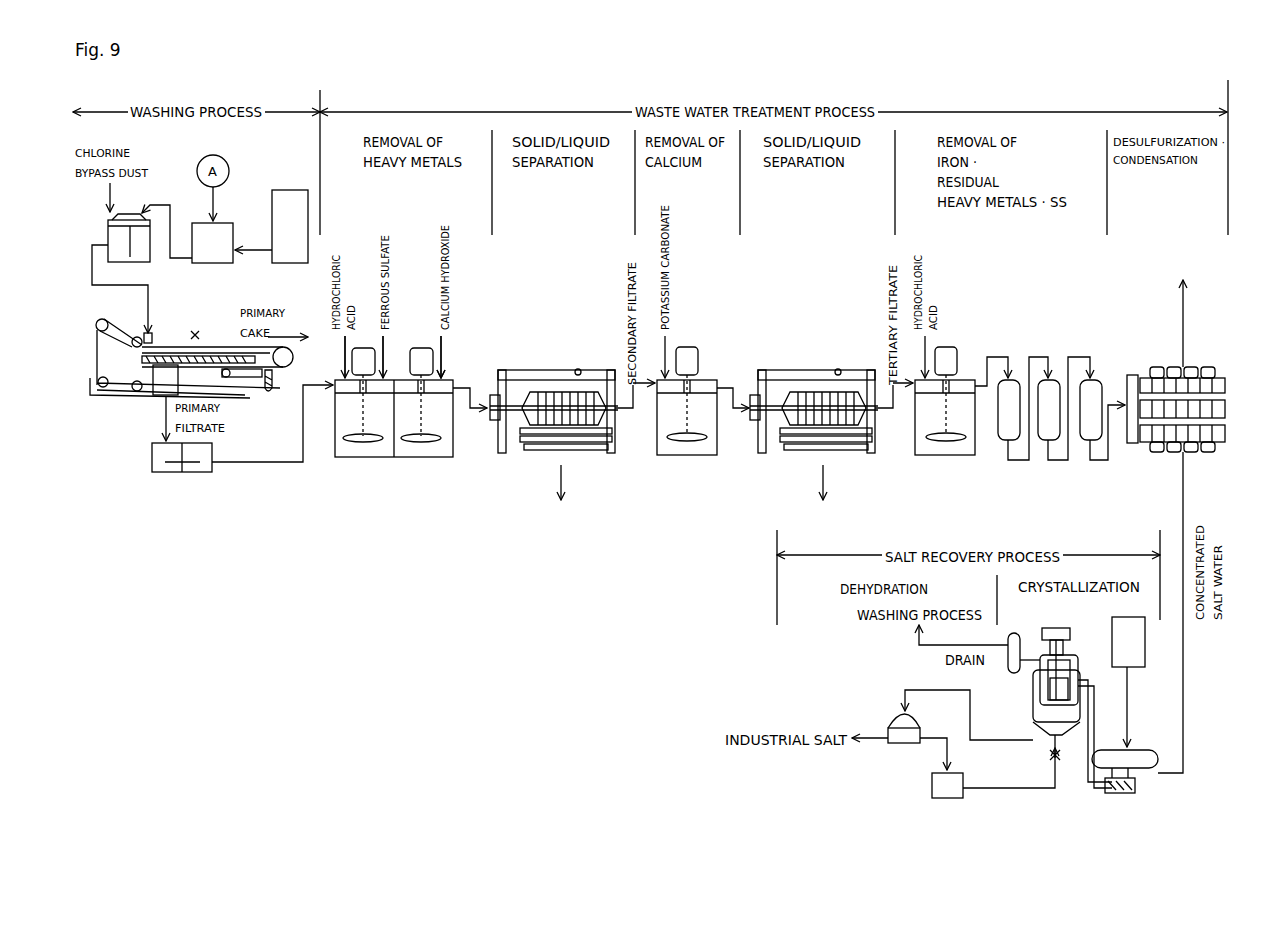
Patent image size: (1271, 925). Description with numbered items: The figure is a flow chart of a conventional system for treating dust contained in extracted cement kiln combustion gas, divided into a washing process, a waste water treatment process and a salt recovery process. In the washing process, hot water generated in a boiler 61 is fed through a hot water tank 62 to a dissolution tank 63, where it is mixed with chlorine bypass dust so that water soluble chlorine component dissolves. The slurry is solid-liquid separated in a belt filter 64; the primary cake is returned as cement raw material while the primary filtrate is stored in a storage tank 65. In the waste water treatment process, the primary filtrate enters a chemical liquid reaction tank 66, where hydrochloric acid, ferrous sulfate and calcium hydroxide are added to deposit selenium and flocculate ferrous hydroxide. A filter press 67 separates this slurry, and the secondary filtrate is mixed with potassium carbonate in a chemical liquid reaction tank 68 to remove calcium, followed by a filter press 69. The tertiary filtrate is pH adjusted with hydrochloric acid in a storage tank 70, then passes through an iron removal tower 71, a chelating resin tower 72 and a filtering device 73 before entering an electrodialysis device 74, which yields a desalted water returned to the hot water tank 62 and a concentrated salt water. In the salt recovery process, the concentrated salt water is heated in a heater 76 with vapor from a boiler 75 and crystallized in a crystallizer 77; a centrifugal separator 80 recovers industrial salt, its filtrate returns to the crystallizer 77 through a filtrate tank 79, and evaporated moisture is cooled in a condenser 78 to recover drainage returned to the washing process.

The boiler 61 is at (300, 190).
The hot water tank 62 is at (212, 263).
The dissolution tank 63 is at (140, 262).
The belt filter 64 is at (130, 398).
The storage tank 65 is at (182, 472).
The chemical liquid reaction tank 66 is at (453, 433).
The filter press 67 is at (537, 368).
The chemical liquid reaction tank 68 is at (678, 455).
The filter press 69 is at (797, 368).
The storage tank 70 is at (927, 455).
The iron removal tower 71 is at (1000, 433).
The chelating resin tower 72 is at (1040, 433).
The filtering device 73 is at (1082, 433).
The electrodialysis device 74 is at (1170, 365).
The boiler 75 is at (1145, 642).
The heater 76 is at (1130, 749).
The crystallizer 77 is at (1035, 695).
The condenser 78 is at (1016, 632).
The filtrate tank 79 is at (945, 798).
The centrifugal separator 80 is at (905, 745).